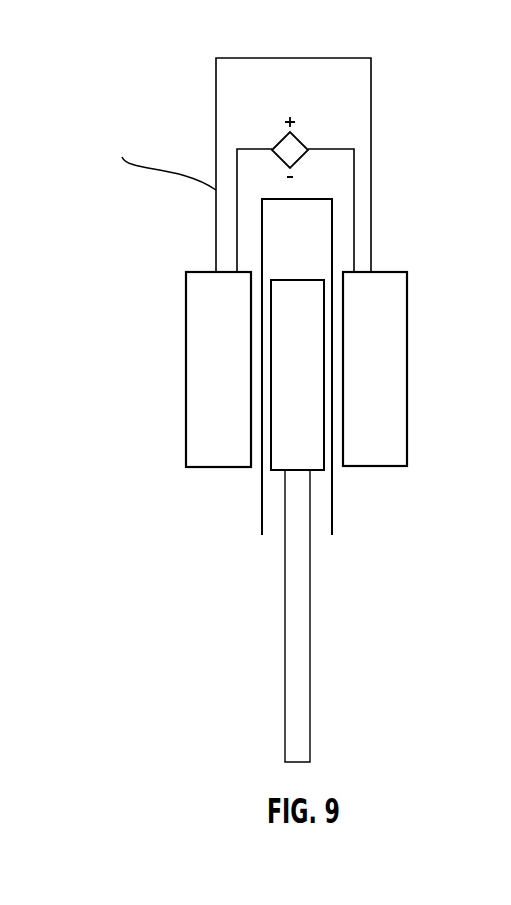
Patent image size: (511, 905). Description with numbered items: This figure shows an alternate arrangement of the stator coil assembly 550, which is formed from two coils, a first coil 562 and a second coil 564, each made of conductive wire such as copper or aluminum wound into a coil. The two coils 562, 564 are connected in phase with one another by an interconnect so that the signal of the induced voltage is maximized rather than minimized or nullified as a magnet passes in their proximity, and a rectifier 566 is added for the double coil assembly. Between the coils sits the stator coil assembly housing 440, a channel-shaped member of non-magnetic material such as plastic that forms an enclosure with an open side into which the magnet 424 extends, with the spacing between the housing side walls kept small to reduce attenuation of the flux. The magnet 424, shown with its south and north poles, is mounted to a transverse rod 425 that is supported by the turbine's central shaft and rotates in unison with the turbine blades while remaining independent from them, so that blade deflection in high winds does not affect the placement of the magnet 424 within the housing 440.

The stator coil assembly 550 is at (182, 405).
The coil 562 is at (182, 340).
The coil 564 is at (407, 363).
The rectifier 566 is at (299, 141).
The stator coil assembly housing 440 is at (334, 232).
The magnet 424 is at (305, 333).
The transverse rod 425 is at (303, 580).